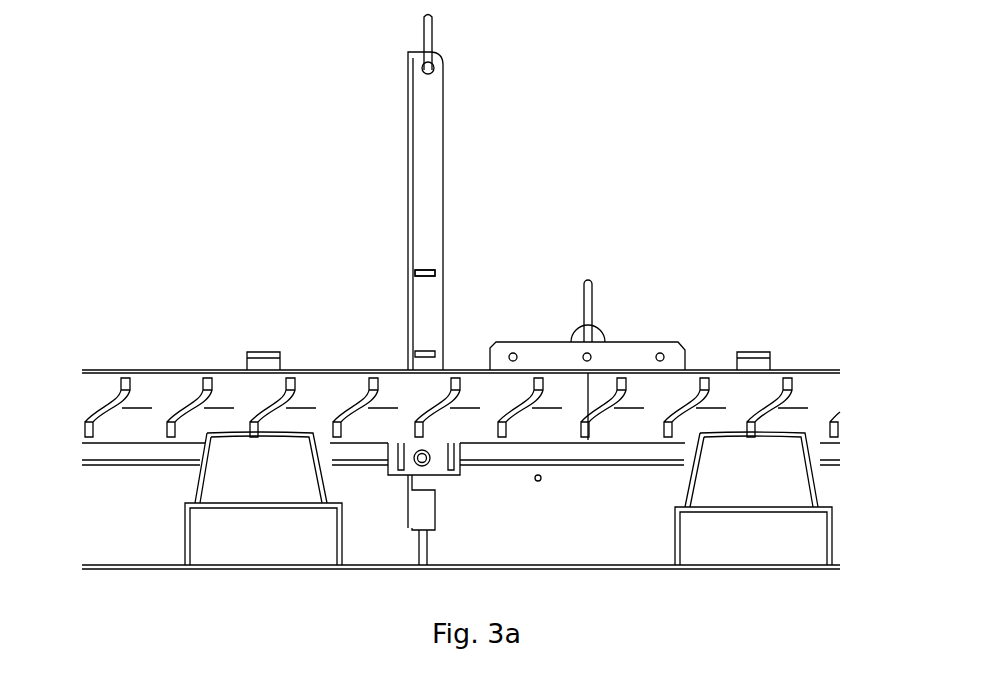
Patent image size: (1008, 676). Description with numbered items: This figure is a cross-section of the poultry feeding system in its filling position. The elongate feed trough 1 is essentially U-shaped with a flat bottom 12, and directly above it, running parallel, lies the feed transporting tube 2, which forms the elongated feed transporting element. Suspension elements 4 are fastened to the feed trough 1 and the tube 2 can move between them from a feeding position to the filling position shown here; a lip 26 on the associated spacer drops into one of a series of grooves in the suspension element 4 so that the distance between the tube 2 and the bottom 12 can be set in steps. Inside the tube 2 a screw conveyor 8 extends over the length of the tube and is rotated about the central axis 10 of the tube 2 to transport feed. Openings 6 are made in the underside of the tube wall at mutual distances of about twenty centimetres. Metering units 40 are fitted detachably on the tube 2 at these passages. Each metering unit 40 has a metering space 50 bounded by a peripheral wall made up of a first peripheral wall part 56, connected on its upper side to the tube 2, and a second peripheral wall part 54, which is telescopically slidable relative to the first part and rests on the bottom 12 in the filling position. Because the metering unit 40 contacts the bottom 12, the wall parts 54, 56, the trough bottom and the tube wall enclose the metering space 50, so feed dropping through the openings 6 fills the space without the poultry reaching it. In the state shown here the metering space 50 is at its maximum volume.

The feed trough 1 is at (156, 588).
The feed transporting tube 2 is at (211, 339).
The suspension elements 4 is at (481, 130).
The openings 6 is at (266, 452).
The screw conveyor 8 is at (343, 382).
The central axis 10 is at (86, 410).
The bottom 12 is at (128, 550).
The lip 26 is at (415, 285).
The metering units 40 is at (377, 526).
The metering space 50 is at (783, 505).
The second peripheral wall part 54 is at (178, 556).
The first peripheral wall part 56 is at (201, 487).